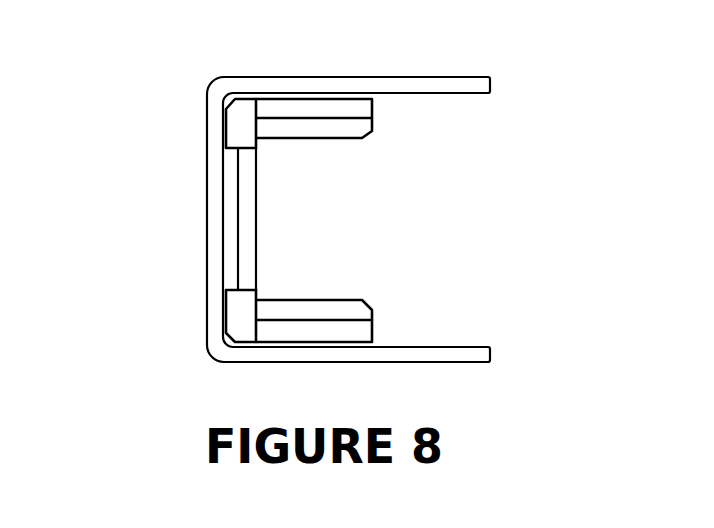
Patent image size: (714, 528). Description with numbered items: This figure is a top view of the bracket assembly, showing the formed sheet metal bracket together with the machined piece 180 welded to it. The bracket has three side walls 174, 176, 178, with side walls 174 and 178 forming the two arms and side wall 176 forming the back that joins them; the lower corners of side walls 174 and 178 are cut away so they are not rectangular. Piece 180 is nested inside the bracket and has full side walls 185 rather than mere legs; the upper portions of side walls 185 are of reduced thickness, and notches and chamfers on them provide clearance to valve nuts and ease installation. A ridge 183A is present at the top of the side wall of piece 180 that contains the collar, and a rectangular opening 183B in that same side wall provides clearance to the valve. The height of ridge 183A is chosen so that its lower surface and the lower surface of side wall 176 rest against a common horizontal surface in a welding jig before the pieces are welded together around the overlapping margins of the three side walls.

The side wall 174 is at (407, 82).
The side wall 176 is at (213, 120).
The side wall 178 is at (428, 362).
The piece 180 is at (358, 138).
The side walls 185 is at (338, 317).
The ridge 183A is at (232, 307).
The rectangular opening 183B is at (247, 213).